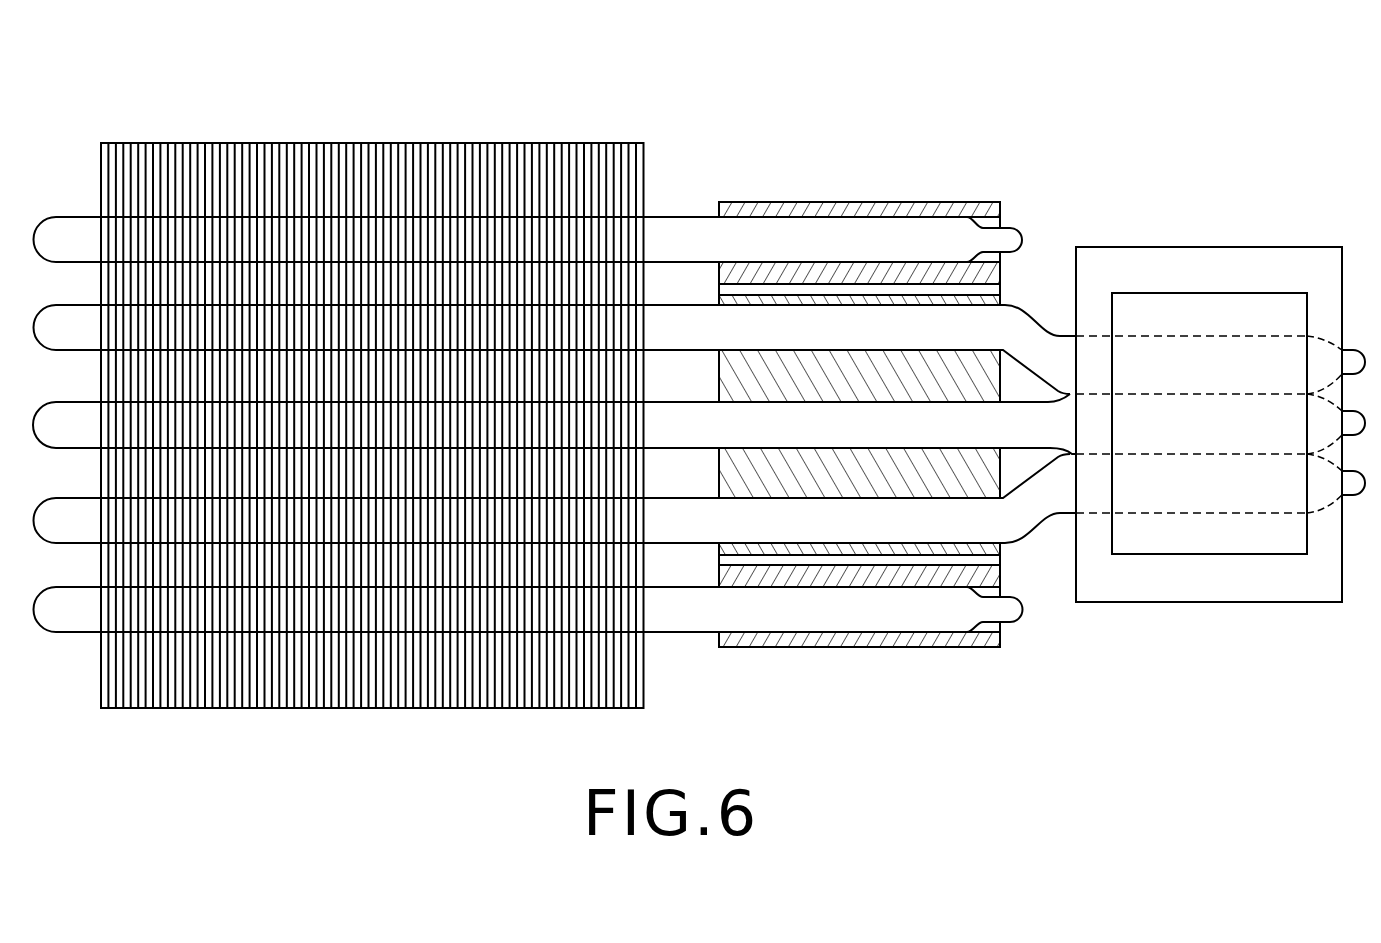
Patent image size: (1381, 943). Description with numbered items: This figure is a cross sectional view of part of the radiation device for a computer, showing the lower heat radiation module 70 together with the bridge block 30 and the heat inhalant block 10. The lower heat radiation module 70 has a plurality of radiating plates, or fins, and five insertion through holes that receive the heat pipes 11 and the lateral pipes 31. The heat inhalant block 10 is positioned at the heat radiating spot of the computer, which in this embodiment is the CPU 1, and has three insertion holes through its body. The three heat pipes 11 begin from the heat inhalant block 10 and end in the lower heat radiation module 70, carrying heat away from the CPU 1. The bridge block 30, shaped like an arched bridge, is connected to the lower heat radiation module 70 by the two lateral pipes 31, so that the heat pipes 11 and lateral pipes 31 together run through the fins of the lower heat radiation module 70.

The lower heat radiation module 70 is at (360, 153).
The bridge block 30 is at (930, 202).
The lateral pipes 31 is at (768, 245).
The heat pipes 11 is at (868, 333).
The heat inhalant block 10 is at (1287, 247).
The CPU 1 is at (1178, 315).